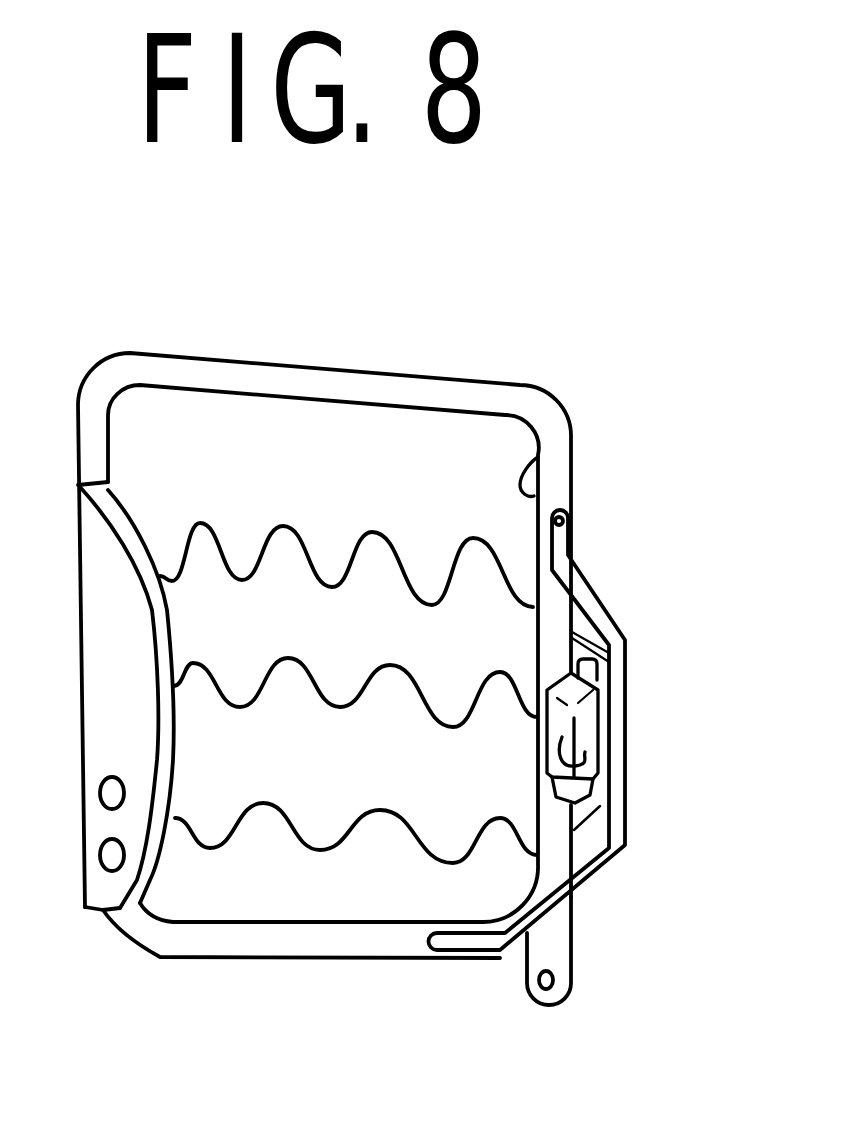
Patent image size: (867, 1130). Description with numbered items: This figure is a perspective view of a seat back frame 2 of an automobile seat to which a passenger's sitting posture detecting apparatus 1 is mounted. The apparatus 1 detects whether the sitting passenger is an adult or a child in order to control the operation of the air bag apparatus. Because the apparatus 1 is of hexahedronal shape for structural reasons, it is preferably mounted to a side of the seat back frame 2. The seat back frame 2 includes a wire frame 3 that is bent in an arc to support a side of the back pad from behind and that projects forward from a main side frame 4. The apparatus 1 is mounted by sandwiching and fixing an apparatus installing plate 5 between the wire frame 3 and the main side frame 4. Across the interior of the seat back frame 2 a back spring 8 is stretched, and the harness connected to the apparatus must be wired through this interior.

The passenger's sitting posture detecting apparatus 1 is at (598, 766).
The seat back frame 2 is at (348, 384).
The wire frame 3 is at (607, 606).
The main side frame 4 is at (538, 457).
The apparatus installing plate 5 is at (583, 812).
The back spring 8 is at (320, 852).